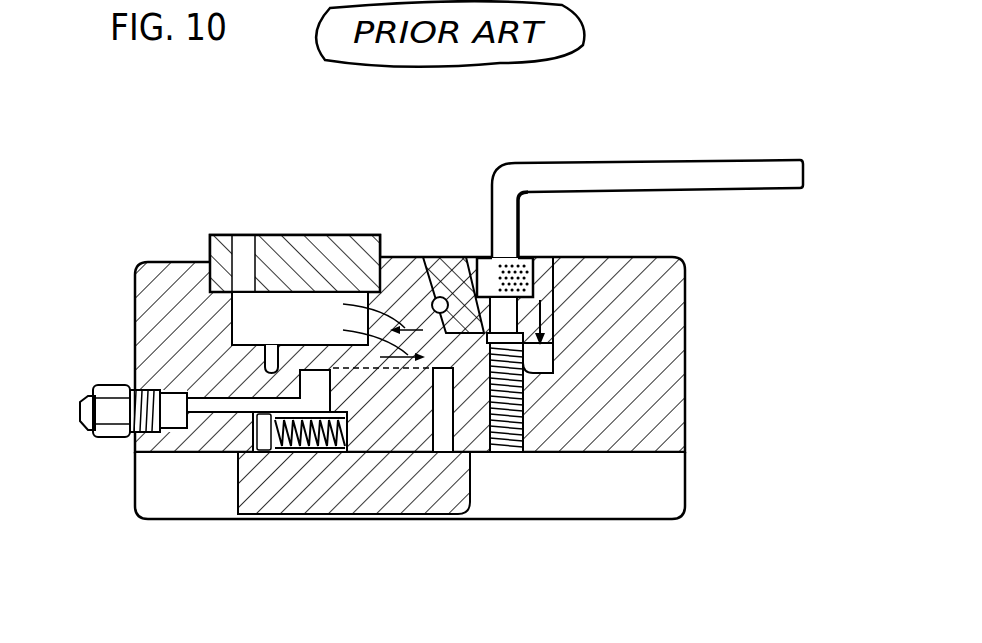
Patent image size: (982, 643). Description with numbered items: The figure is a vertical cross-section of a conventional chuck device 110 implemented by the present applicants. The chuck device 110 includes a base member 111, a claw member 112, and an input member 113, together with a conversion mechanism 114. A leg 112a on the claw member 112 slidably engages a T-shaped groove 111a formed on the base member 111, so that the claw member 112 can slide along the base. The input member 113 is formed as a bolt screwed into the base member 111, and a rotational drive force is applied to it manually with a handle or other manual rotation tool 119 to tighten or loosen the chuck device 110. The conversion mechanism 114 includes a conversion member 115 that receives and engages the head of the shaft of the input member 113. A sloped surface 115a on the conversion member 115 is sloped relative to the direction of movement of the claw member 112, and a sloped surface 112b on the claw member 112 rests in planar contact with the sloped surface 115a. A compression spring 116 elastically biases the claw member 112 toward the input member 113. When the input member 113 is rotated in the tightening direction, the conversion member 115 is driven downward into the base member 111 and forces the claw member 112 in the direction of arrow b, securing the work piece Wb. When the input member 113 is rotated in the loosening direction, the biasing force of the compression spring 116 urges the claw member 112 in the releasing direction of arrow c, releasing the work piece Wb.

The chuck device 110 is at (449, 319).
The base member 111 is at (135, 292).
The T-shaped groove 111a is at (675, 478).
The claw member 112 is at (400, 243).
The leg 112a is at (350, 487).
The sloped surface 112b is at (393, 410).
The input member 113 is at (535, 258).
The conversion mechanism 114 is at (423, 222).
The conversion member 115 is at (457, 250).
The sloped surface 115a is at (563, 253).
The compression spring 116 is at (268, 455).
The manual rotation tool 119 is at (795, 162).
The work piece Wb is at (322, 233).
The arrow b is at (375, 311).
The arrow c is at (376, 335).